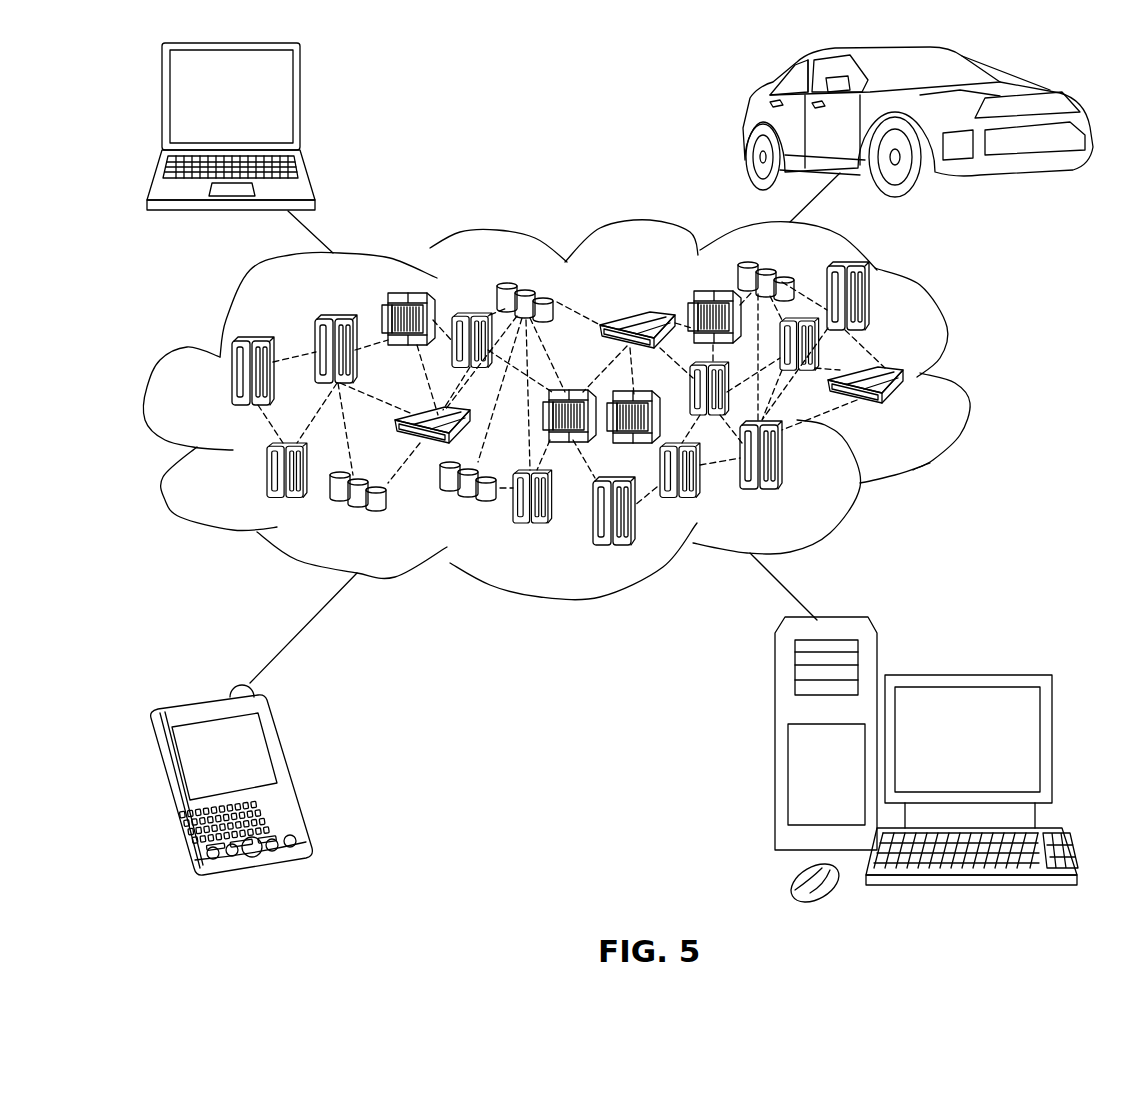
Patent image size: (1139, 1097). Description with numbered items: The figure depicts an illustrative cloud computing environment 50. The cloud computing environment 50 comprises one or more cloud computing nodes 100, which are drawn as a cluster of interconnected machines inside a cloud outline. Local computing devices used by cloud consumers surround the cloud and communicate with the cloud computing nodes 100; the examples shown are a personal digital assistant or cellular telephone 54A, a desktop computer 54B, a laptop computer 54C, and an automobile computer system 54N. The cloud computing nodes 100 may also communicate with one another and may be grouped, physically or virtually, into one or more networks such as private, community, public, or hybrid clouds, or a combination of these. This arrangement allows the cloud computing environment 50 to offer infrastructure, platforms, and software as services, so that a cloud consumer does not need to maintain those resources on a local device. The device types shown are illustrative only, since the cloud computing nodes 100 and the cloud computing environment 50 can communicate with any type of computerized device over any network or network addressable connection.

The cloud computing environment 50 is at (967, 386).
The cloud computing nodes 100 is at (914, 412).
The personal digital assistant (PDA) or cellular telephone 54A is at (293, 768).
The desktop computer 54B is at (963, 675).
The laptop computer 54C is at (302, 105).
The automobile computer system 54N is at (745, 120).